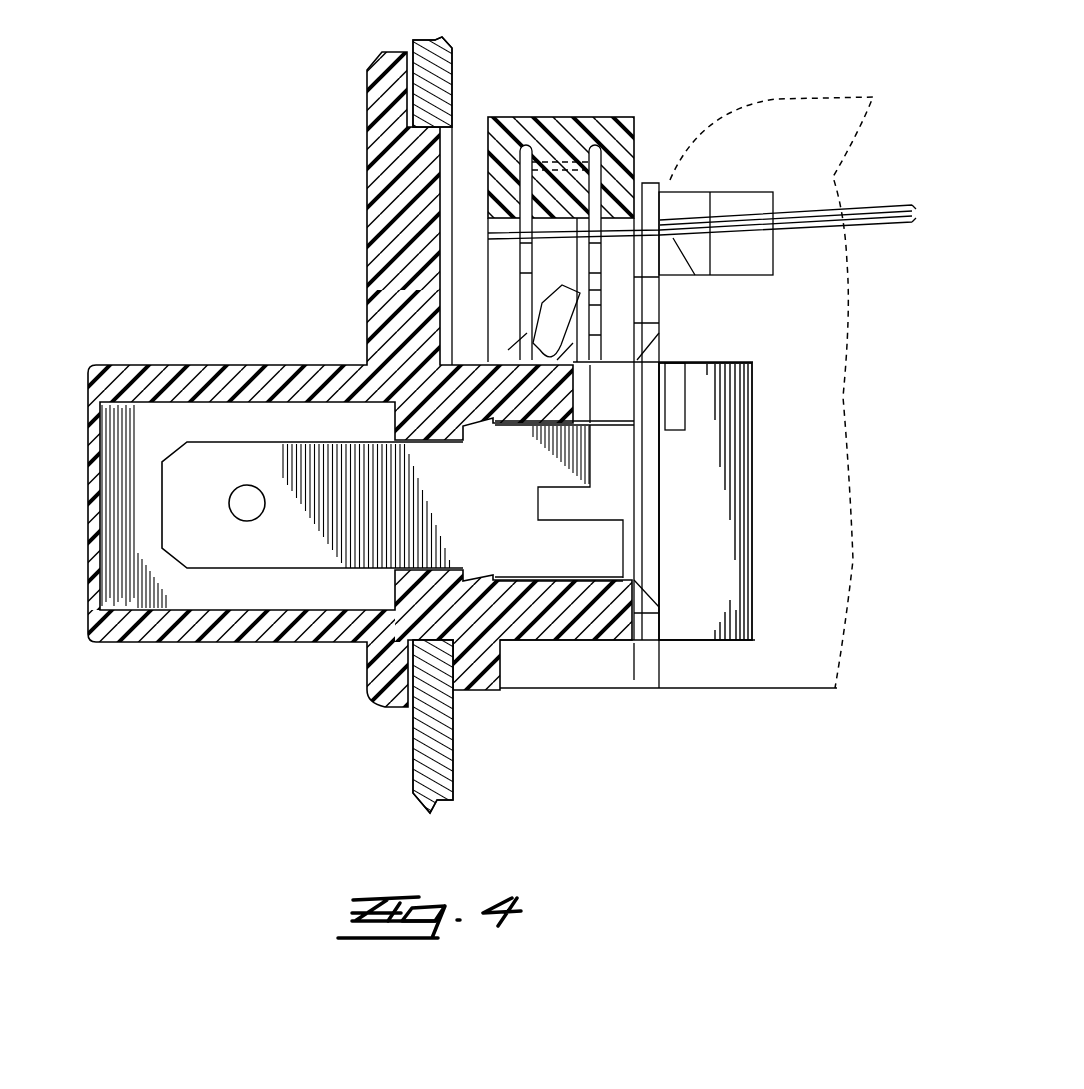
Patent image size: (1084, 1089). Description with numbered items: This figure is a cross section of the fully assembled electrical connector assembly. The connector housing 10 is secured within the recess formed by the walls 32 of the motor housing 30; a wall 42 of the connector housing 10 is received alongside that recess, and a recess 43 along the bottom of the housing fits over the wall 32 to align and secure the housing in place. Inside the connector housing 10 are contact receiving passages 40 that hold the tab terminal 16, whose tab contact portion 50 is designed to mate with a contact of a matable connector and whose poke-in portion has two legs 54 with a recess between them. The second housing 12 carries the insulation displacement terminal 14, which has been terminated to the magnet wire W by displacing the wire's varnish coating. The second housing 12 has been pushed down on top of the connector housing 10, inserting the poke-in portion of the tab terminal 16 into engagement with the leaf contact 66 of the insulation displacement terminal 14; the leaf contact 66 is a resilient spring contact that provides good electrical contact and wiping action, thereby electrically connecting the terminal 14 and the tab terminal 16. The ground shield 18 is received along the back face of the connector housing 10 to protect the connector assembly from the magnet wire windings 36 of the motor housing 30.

The connector housing 10 is at (186, 352).
The second housing 12 is at (540, 105).
The insulation displacement terminal 14 is at (510, 258).
The tab terminal 16 is at (598, 207).
The ground shield 18 is at (650, 537).
The motor housing 30 is at (402, 806).
The walls of the motor housing 32 is at (450, 763).
The magnet wire windings 36 is at (813, 424).
The contact receiving passages 40 is at (190, 595).
The wall 42 is at (387, 120).
The recess 43 is at (408, 703).
The tab contact portion 50 is at (288, 548).
The legs 54 is at (587, 309).
The leaf contact 66 is at (542, 305).
The magnet wire W is at (893, 205).